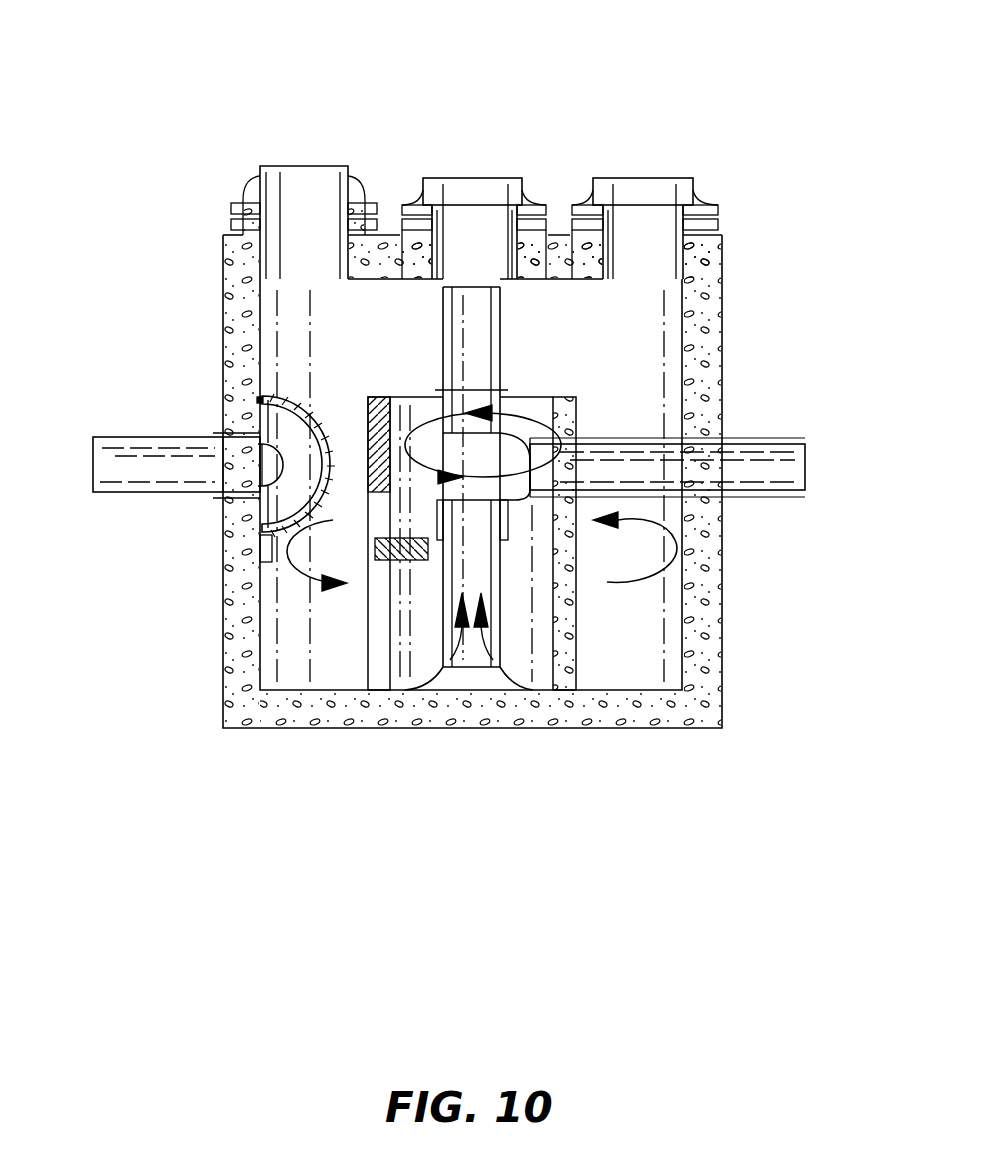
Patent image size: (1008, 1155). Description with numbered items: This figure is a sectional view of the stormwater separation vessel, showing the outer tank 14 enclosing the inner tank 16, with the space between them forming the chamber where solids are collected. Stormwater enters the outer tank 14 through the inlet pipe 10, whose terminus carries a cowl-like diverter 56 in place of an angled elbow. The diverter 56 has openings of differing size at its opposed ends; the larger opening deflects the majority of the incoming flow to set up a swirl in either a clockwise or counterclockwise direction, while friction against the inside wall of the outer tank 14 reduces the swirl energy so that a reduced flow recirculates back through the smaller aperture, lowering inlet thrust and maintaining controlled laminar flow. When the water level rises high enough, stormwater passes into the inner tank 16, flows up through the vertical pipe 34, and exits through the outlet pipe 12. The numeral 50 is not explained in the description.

The inlet pipe 10 is at (163, 492).
The outlet pipe 12 is at (763, 434).
The outer tank 14 is at (240, 635).
The inner tank 16 is at (370, 625).
The vertical pipe 34 is at (500, 322).
The inlet pipe end cap 50 is at (258, 400).
The diverter 56 is at (305, 394).